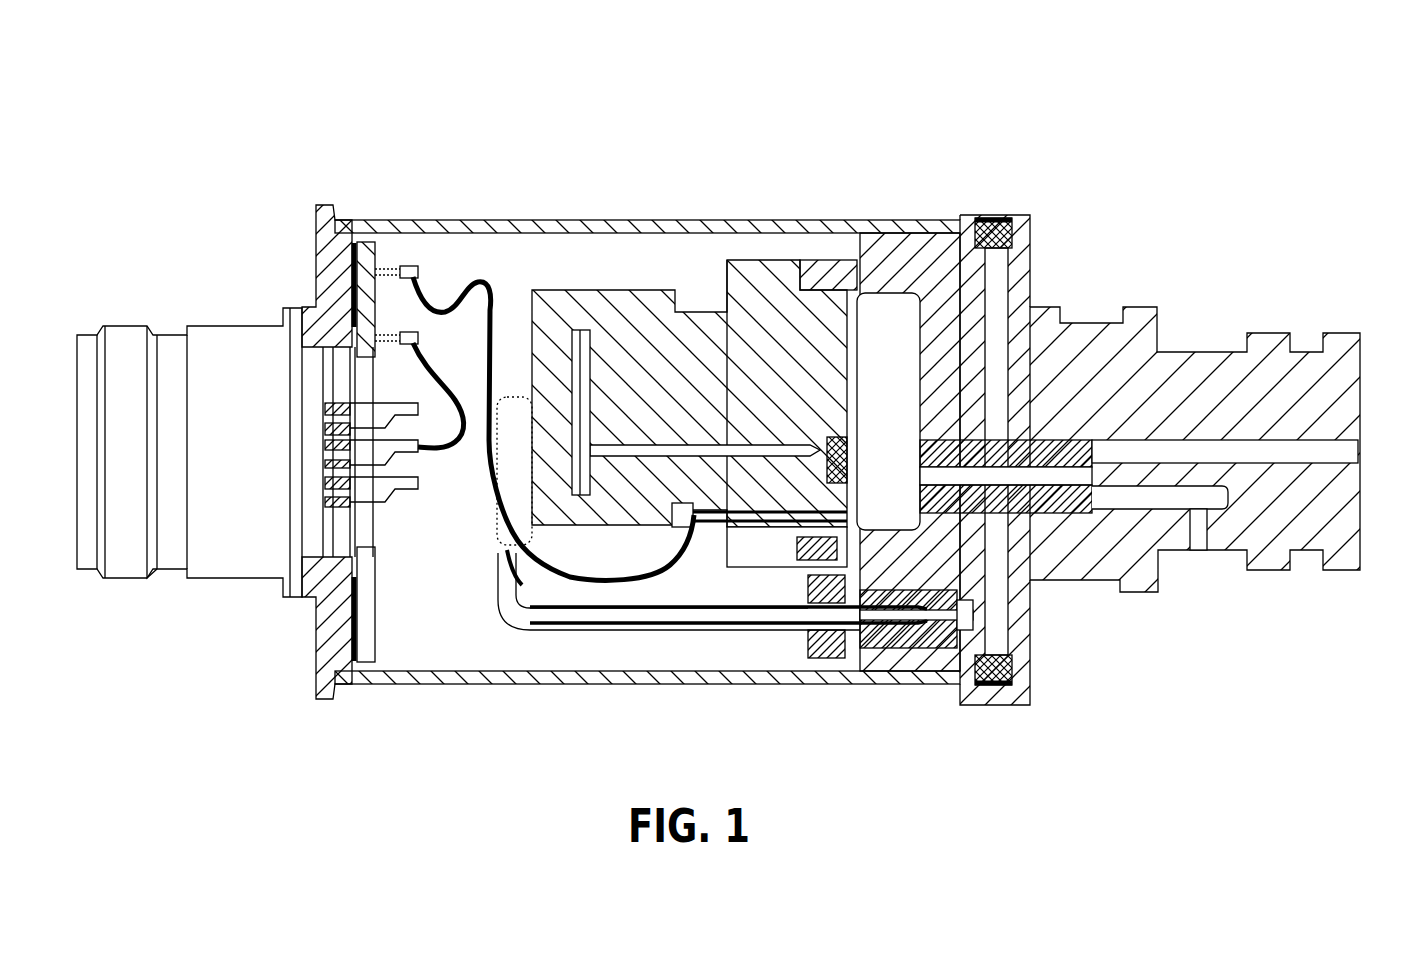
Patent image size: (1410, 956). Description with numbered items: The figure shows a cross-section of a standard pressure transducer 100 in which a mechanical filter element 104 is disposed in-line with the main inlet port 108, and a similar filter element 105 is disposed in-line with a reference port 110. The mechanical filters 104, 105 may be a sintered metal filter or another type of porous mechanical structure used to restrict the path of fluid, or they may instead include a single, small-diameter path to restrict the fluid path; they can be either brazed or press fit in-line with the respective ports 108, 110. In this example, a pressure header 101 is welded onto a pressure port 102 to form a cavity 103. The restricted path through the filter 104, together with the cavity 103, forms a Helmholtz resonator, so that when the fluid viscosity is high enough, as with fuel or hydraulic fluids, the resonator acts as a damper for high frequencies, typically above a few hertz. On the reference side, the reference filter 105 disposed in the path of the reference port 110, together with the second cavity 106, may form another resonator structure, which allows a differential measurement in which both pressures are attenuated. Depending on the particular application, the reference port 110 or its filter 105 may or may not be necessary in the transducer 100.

The pressure transducer 100 is at (661, 80).
The pressure header 101 is at (770, 292).
The pressure port 102 is at (1165, 378).
The cavity 103 is at (882, 330).
The mechanical filter element 104 is at (1065, 437).
The reference filter element 105 is at (1050, 505).
The second cavity 106 is at (583, 348).
The inlet port 108 is at (1345, 457).
The reference port 110 is at (1201, 545).